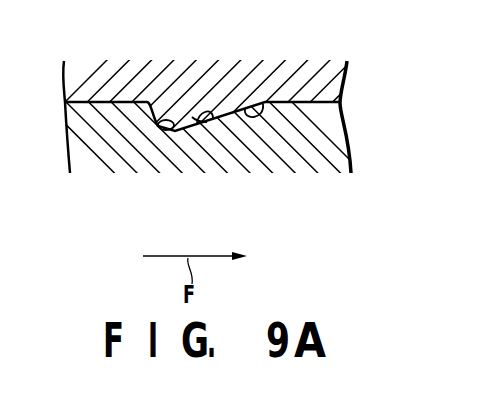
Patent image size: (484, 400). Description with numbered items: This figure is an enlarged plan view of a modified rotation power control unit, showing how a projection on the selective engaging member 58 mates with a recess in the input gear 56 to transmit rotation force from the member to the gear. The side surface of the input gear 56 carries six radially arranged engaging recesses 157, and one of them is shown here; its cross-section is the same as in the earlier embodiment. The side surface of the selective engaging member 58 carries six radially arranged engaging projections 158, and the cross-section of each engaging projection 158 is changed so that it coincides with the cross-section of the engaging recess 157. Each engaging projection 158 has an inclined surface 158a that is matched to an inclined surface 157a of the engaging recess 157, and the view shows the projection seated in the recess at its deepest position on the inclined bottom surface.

The input gear 56 is at (110, 137).
The selective engaging member 58 is at (117, 72).
The engaging recess 157 is at (172, 130).
The inclined surface 157a is at (220, 120).
The engaging projection 158 is at (192, 117).
The inclined surface 158a is at (250, 106).